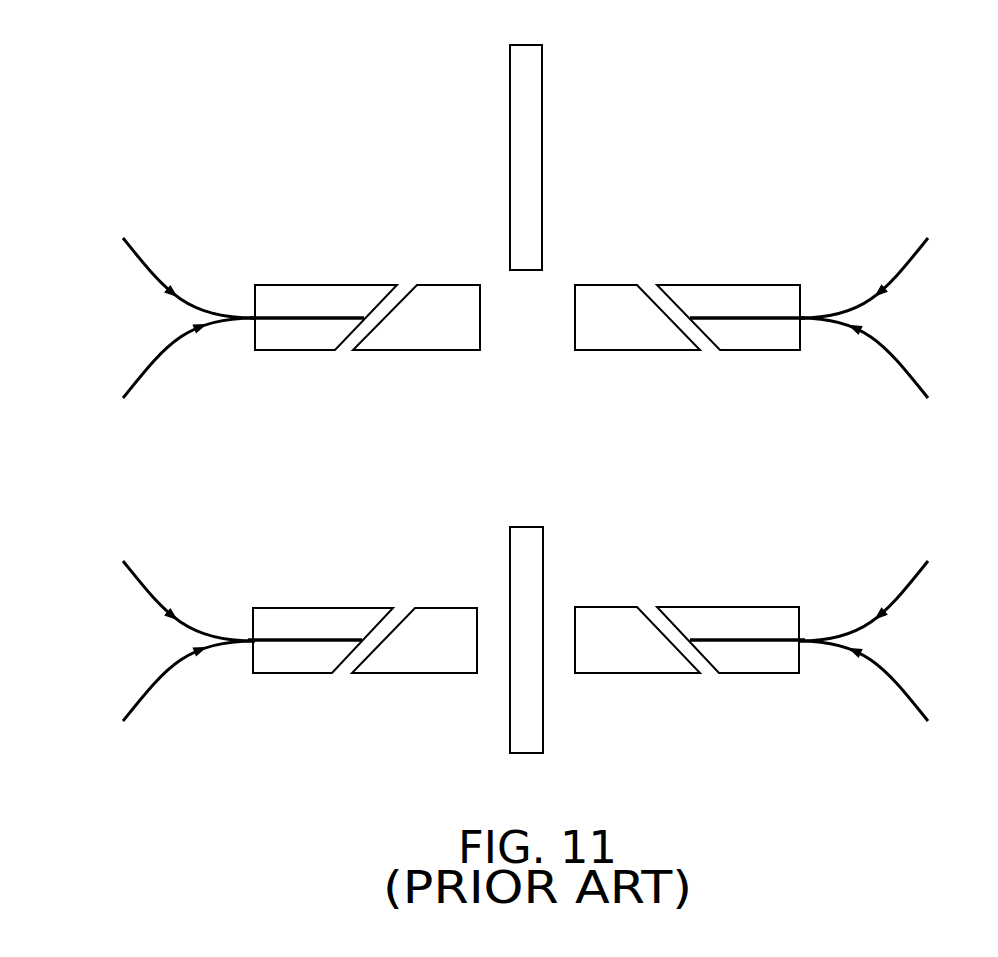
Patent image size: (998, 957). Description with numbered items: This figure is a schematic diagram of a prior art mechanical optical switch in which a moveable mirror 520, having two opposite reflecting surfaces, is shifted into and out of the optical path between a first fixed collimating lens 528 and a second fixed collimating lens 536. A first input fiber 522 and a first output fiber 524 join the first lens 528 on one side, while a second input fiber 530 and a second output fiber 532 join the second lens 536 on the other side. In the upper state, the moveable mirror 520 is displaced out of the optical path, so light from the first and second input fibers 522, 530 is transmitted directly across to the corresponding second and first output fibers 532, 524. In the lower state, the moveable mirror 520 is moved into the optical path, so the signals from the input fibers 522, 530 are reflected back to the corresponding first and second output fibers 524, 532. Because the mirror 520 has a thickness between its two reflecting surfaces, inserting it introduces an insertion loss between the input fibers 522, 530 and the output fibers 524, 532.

The moveable mirror 520 is at (508, 145).
The first input fiber 522 is at (148, 270).
The first output fiber 524 is at (148, 363).
The first fixed collimating lens 528 is at (435, 352).
The second input fiber 530 is at (910, 267).
The second output fiber 532 is at (890, 350).
The second fixed collimating lens 536 is at (643, 350).